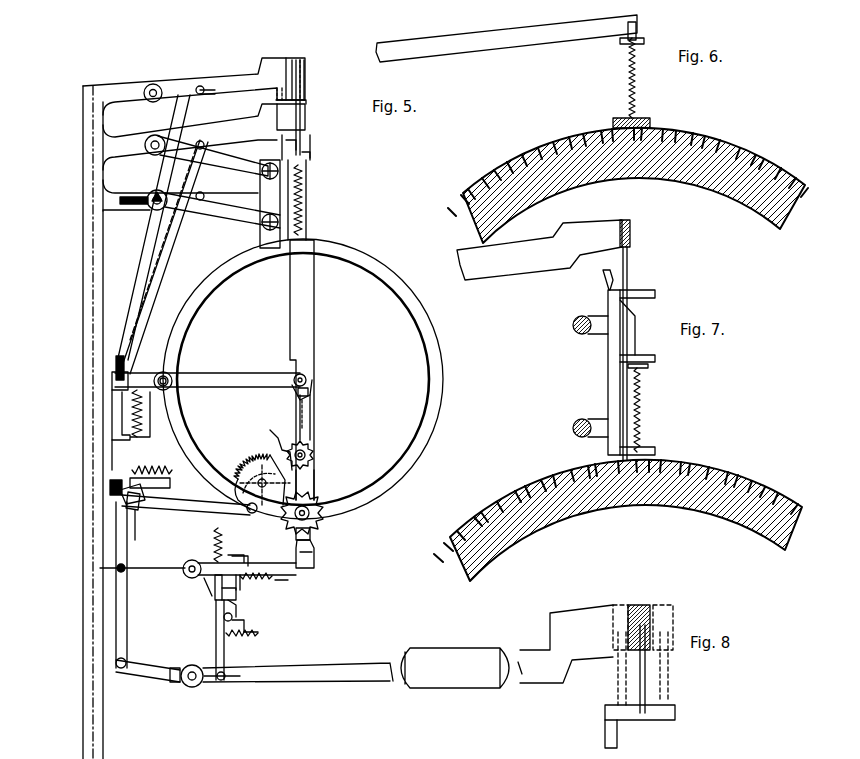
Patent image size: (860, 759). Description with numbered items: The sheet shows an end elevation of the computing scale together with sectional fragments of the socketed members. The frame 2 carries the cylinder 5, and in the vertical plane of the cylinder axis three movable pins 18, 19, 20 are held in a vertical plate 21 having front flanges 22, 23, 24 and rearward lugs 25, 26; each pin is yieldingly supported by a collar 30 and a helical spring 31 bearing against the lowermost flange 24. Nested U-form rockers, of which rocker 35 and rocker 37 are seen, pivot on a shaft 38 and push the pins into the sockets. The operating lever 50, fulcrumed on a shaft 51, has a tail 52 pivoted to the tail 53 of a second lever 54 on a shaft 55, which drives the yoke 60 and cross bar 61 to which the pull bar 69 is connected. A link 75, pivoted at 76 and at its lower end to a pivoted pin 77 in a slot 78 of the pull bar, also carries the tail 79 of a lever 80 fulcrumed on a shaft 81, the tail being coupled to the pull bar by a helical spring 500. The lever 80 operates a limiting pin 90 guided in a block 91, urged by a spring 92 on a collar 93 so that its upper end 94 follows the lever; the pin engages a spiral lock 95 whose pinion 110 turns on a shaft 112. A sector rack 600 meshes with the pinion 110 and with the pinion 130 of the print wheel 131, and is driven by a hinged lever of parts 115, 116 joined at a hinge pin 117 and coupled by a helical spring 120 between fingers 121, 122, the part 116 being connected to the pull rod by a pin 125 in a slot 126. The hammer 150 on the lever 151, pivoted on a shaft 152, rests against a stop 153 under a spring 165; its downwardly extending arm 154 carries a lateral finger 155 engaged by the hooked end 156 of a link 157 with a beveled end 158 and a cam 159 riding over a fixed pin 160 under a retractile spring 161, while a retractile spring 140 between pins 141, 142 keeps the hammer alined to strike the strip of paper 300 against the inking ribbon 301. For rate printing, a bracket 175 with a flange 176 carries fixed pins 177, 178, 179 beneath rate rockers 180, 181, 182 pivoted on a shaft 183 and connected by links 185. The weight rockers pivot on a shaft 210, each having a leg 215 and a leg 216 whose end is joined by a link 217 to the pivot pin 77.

In FIG. 5, the frame 2 is at (100, 280).
In FIG. 5, the cylinder 5 is at (432, 318).
In FIG. 6, the cylinder 5 is at (518, 164).
In FIG. 7, the cylinder 5 is at (512, 494).
In FIG. 5, the pin 18 is at (306, 143).
In FIG. 5, the pin 19 is at (311, 154).
In FIG. 5, the pin 20 is at (308, 162).
In FIG. 7, the pin 20 is at (630, 272).
In FIG. 5, the vertical plate 21 is at (306, 200).
In FIG. 7, the vertical plate 21 is at (608, 383).
In FIG. 7, the flange 22 is at (650, 294).
In FIG. 7, the flange 23 is at (652, 360).
In FIG. 7, the lowermost flange 24 is at (650, 450).
In FIG. 5, the lug 25 is at (261, 172).
In FIG. 7, the lug 25 is at (573, 325).
In FIG. 5, the lug 26 is at (261, 222).
In FIG. 7, the lug 26 is at (573, 428).
In FIG. 7, the collar 30 is at (650, 368).
In FIG. 7, the helical spring 31 is at (642, 395).
In FIG. 7, the rocker 35 is at (632, 233).
In FIG. 5, the rocker 37 is at (306, 120).
In FIG. 5, the shaft 38 is at (155, 136).
In FIG. 5, the operating lever 50 is at (336, 680).
In FIG. 5, the shaft 51 is at (194, 687).
In FIG. 5, the tail 52 is at (192, 665).
In FIG. 5, the tail 53 is at (165, 668).
In FIG. 5, the second lever 54 is at (140, 668).
In FIG. 5, the shaft 55 is at (172, 684).
In FIG. 5, the yoke 60 is at (125, 640).
In FIG. 5, the cross bar 61 is at (128, 568).
In FIG. 5, the pull bar 69 is at (118, 440).
In FIG. 5, the link 75 is at (168, 226).
In FIG. 5, the pivot 76 is at (205, 144).
In FIG. 5, the pivoted pin 77 is at (112, 382).
In FIG. 5, the slot 78 is at (114, 360).
In FIG. 5, the tail 79 is at (160, 372).
In FIG. 5, the lever 80 is at (222, 380).
In FIG. 5, the shaft 81 is at (172, 376).
In FIG. 5, the limiting pin 90 is at (315, 398).
In FIG. 5, the block 91 is at (312, 408).
In FIG. 5, the spring 92 is at (310, 386).
In FIG. 5, the collar 93 is at (306, 378).
In FIG. 5, the upper end 94 is at (305, 372).
In FIG. 5, the spiral lock 95 is at (278, 446).
In FIG. 5, the pinion 110 is at (312, 452).
In FIG. 5, the shaft 112 is at (314, 456).
In FIG. 5, the lever part 115 is at (185, 505).
In FIG. 5, the lever part 116 is at (160, 520).
In FIG. 5, the hinge pin 117 is at (142, 516).
In FIG. 5, the helical spring 120 is at (168, 476).
In FIG. 5, the finger 121 is at (160, 484).
In FIG. 5, the finger 122 is at (146, 432).
In FIG. 5, the pin 125 is at (118, 494).
In FIG. 5, the slot 126 is at (112, 480).
In FIG. 5, the pinion 130 is at (330, 512).
In FIG. 5, the print wheel 131 is at (322, 522).
In FIG. 5, the retractile spring 140 is at (252, 568).
In FIG. 5, the pin 141 is at (274, 578).
In FIG. 5, the pin 142 is at (278, 585).
In FIG. 5, the hammer 150 is at (316, 566).
In FIG. 5, the lever 151 is at (194, 560).
In FIG. 5, the shaft 152 is at (215, 578).
In FIG. 5, the stop 153 is at (246, 562).
In FIG. 5, the downwardly extending arm 154 is at (244, 590).
In FIG. 5, the lateral finger 155 is at (234, 616).
In FIG. 5, the hooked end 156 is at (224, 596).
In FIG. 5, the link 157 is at (218, 626).
In FIG. 5, the beveled end 158 is at (210, 592).
In FIG. 5, the cam 159 is at (246, 624).
In FIG. 5, the fixed pin 160 is at (260, 636).
In FIG. 5, the retractile spring 161 is at (230, 636).
In FIG. 5, the spring 165 is at (220, 530).
In FIG. 5, the bracket 175 is at (308, 83).
In FIG. 8, the bracket 175 is at (605, 736).
In FIG. 5, the flange 176 is at (307, 100).
In FIG. 8, the flange 176 is at (677, 712).
In FIG. 5, the pin 177 is at (280, 95).
In FIG. 8, the pin 177 is at (616, 695).
In FIG. 5, the pin 178 is at (296, 75).
In FIG. 8, the pin 178 is at (646, 678).
In FIG. 5, the pin 179 is at (302, 80).
In FIG. 8, the pin 179 is at (670, 688).
In FIG. 8, the rate rocker 180 is at (614, 612).
In FIG. 8, the rate rocker 181 is at (648, 599).
In FIG. 8, the rate rocker 182 is at (668, 616).
In FIG. 5, the shaft 183 is at (145, 90).
In FIG. 5, the link 185 is at (188, 118).
In FIG. 5, the shaft 210 is at (145, 202).
In FIG. 6, the leg 215 is at (556, 34).
In FIG. 5, the leg 216 is at (203, 245).
In FIG. 5, the link 217 is at (172, 258).
In FIG. 5, the strip of paper 300 is at (316, 542).
In FIG. 5, the inking ribbon 301 is at (312, 535).
In FIG. 5, the helical spring 500 is at (143, 413).
In FIG. 5, the sector rack 600 is at (248, 465).